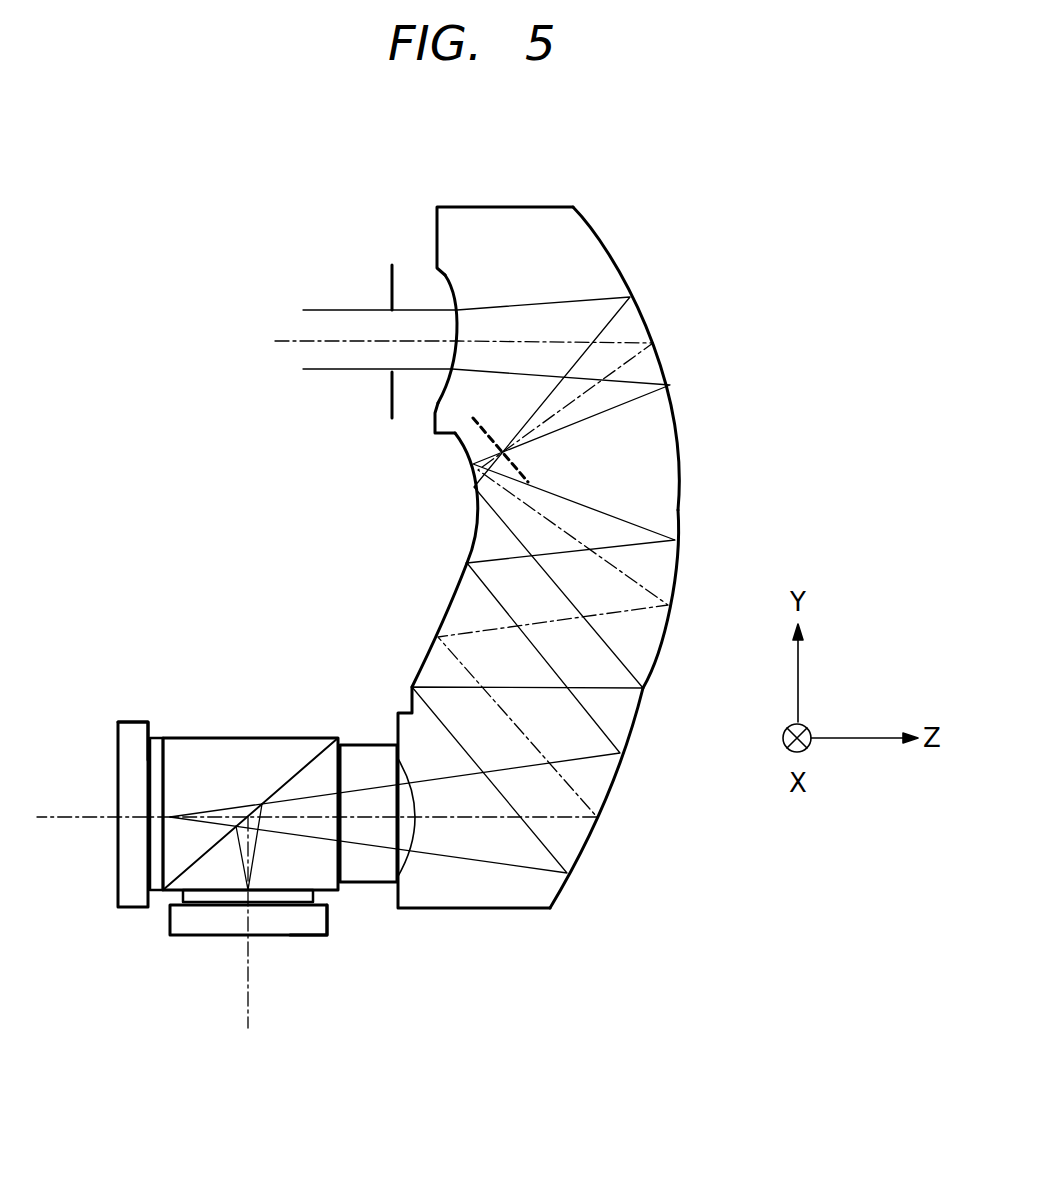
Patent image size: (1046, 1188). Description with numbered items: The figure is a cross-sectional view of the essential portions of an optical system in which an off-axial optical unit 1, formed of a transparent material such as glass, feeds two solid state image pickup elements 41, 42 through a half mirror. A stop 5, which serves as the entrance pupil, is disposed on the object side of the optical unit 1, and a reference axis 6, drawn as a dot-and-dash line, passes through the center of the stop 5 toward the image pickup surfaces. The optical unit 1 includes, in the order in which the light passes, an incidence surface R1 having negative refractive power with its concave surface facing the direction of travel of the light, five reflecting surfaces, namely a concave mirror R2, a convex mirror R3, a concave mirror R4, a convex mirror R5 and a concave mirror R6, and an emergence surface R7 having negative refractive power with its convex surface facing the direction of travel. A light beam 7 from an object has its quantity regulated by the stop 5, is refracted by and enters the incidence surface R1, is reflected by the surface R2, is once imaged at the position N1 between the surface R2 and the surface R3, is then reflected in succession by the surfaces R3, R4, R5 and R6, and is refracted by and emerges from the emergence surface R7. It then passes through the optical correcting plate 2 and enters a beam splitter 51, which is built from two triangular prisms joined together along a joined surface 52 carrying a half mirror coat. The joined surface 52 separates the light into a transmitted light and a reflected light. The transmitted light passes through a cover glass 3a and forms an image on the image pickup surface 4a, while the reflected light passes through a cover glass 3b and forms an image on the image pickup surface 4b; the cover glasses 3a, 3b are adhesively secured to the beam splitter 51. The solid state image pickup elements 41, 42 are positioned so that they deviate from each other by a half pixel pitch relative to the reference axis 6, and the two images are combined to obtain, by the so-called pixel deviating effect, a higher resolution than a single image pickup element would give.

The optical unit 1 is at (663, 423).
The optical correcting plate 2 is at (378, 747).
The cover glass 3a is at (158, 738).
The cover glass 3b is at (180, 897).
The image pickup surface 4a is at (117, 769).
The image pickup surface 4b is at (197, 937).
The solid state image pickup element 41 is at (127, 733).
The solid state image pickup element 42 is at (301, 937).
The stop 5 is at (392, 278).
The reference axis 6 is at (285, 338).
The light beam 7 is at (345, 310).
The beam splitter 51 is at (226, 740).
The joined surface 52 is at (302, 765).
The incidence surface R1 is at (447, 282).
The concave mirror R2 is at (614, 262).
The convex mirror R3 is at (477, 502).
The concave mirror R4 is at (678, 548).
The convex mirror R5 is at (436, 637).
The concave mirror R6 is at (590, 840).
The emergence surface R7 is at (408, 866).
The intermediate imaging position N1 is at (490, 436).